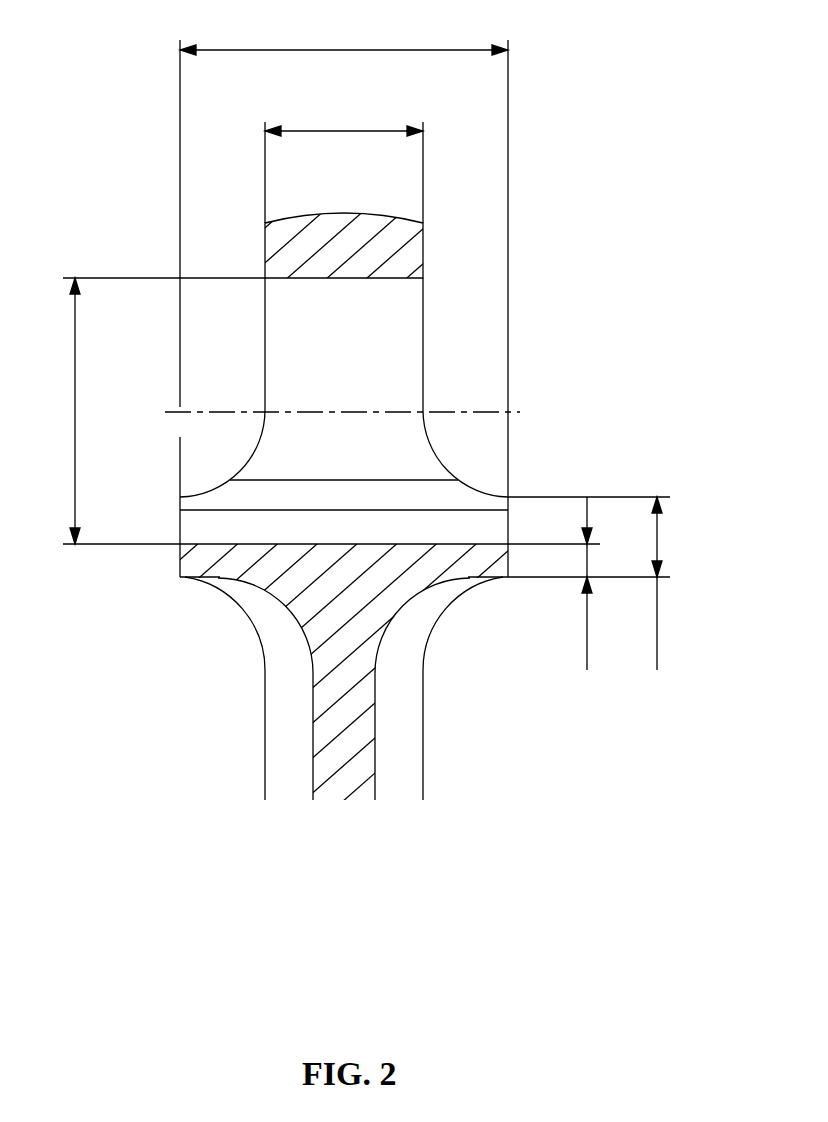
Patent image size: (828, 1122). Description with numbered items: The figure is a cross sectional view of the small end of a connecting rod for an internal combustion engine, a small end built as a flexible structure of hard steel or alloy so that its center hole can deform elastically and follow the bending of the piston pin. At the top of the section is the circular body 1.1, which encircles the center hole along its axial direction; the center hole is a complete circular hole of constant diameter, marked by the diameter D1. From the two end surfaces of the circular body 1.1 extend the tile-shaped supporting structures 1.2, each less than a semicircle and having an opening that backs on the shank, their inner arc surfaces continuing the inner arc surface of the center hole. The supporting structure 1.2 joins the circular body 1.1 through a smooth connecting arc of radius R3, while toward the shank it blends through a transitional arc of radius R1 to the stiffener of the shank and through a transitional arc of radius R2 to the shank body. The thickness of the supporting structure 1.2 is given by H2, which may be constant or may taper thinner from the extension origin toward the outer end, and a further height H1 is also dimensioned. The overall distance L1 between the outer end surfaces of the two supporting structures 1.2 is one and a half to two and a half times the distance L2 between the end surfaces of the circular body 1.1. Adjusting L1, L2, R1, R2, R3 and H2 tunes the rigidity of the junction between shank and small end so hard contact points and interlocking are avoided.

The circular body 1.1 is at (350, 267).
The tile-shaped supporting structure 1.2 is at (190, 548).
The distance between two outer end surfaces of the two tile-shaped supporting struct L1 is at (344, 253).
The distance between two end surfaces of the circular body L2 is at (344, 158).
The diameter of the center hole D1 is at (164, 411).
The height H1 is at (589, 583).
The thickness of the tile-shaped supporting structure H2 is at (554, 583).
The radius of transitional connecting arc between stiffener of the shank and the til R1 is at (232, 598).
The radius of transitional connecting arc between the shank body and the tile-shaped R2 is at (283, 608).
The radius of smooth connecting arc between the tile-shaped supporting structure and R3 is at (253, 455).